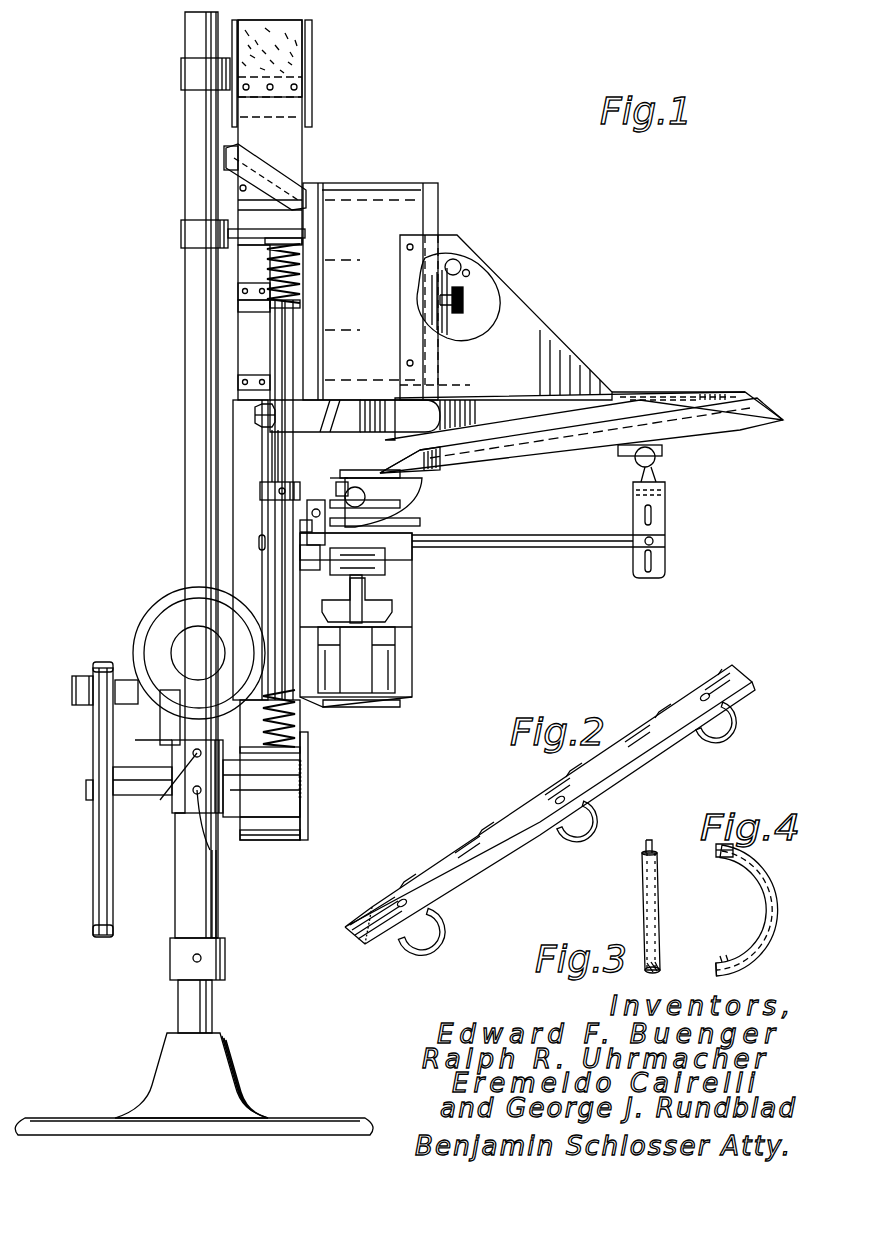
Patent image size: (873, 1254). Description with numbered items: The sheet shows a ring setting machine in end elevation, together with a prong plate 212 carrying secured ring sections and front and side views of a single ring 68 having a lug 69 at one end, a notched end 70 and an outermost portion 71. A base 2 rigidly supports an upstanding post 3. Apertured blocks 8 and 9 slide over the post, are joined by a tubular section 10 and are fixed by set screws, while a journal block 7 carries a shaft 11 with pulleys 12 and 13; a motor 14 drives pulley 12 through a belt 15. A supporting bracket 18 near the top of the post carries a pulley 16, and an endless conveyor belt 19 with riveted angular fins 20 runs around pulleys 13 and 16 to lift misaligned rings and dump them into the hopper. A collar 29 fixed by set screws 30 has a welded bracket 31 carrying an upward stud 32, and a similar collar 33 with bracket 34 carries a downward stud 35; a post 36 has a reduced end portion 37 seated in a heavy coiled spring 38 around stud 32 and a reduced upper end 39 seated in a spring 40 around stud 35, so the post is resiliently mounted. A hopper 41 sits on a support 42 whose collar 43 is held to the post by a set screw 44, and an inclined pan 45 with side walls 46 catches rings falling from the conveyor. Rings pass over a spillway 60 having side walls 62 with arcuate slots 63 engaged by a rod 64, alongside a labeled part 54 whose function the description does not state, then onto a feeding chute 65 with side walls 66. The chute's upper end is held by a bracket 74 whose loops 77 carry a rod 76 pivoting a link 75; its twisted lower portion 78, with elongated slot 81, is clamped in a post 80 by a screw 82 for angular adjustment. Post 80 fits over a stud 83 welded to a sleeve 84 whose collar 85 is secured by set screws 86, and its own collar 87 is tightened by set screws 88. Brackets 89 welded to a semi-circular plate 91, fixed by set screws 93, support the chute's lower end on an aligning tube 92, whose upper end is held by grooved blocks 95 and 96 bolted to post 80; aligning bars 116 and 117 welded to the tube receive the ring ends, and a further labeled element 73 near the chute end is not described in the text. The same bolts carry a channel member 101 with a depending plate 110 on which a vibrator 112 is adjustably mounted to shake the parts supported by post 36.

In FIG. 1, the base 2 is at (170, 1045).
In FIG. 1, the post 3 is at (185, 123).
In FIG. 1, the journal block 7 is at (113, 780).
In FIG. 1, the block 8 is at (170, 945).
In FIG. 1, the block 9 is at (188, 805).
In FIG. 1, the tubular section 10 is at (220, 880).
In FIG. 1, the shaft 11 is at (86, 790).
In FIG. 1, the pulley 12 is at (96, 915).
In FIG. 1, the pulley 13 is at (308, 806).
In FIG. 1, the motor 14 is at (160, 612).
In FIG. 1, the belt 15 is at (95, 664).
In FIG. 1, the pulley 16 is at (312, 66).
In FIG. 1, the supporting bracket 18 is at (181, 73).
In FIG. 1, the endless conveyor belt 19 is at (300, 133).
In FIG. 1, the angular fins 20 is at (238, 290).
In FIG. 1, the collar 29 is at (165, 740).
In FIG. 1, the set screws 30 is at (175, 800).
In FIG. 1, the bracket 31 is at (290, 782).
In FIG. 1, the stud 32 is at (300, 751).
In FIG. 1, the collar 33 is at (181, 237).
In FIG. 1, the bracket 34 is at (305, 233).
In FIG. 1, the stud 35 is at (302, 245).
In FIG. 1, the post 36 is at (285, 440).
In FIG. 1, the end portion 37 is at (303, 700).
In FIG. 1, the coiled spring 38 is at (296, 727).
In FIG. 1, the reduced upper end 39 is at (240, 312).
In FIG. 1, the spring 40 is at (300, 268).
In FIG. 1, the hopper 41 is at (418, 195).
In FIG. 1, the support 42 is at (400, 418).
In FIG. 1, the collar 43 is at (290, 437).
In FIG. 1, the set screw 44 is at (255, 414).
In FIG. 1, the inclined pan 45 is at (226, 160).
In FIG. 1, the side walls 46 is at (285, 178).
In FIG. 1, the key 54 is at (463, 292).
In FIG. 1, the spillway 60 is at (650, 390).
In FIG. 1, the side walls 62 is at (540, 325).
In FIG. 1, the arcuate slots 63 is at (470, 272).
In FIG. 1, the rod 64 is at (460, 262).
In FIG. 1, the feeding chute 65 is at (755, 430).
In FIG. 1, the side walls 66 is at (478, 434).
In FIG. 2, the ring 68 is at (738, 716).
In FIG. 3, the ring 68 is at (642, 893).
In FIG. 4, the ring 68 is at (750, 965).
In FIG. 3, the lug 69 is at (648, 834).
In FIG. 4, the lug 69 is at (734, 850).
In FIG. 3, the notched end 70 is at (658, 965).
In FIG. 4, the outermost portion of the ring 71 is at (772, 895).
In FIG. 1, the ball 73 is at (355, 487).
In FIG. 1, the bracket 74 is at (620, 456).
In FIG. 1, the link 75 is at (662, 485).
In FIG. 1, the rod 76 is at (641, 476).
In FIG. 1, the loops 77 is at (656, 455).
In FIG. 1, the lower portion of link 78 is at (652, 560).
In FIG. 1, the post 80 is at (565, 548).
In FIG. 1, the elongated slot 81 is at (652, 513).
In FIG. 1, the screw 82 is at (654, 541).
In FIG. 1, the stud 83 is at (300, 527).
In FIG. 1, the sleeve 84 is at (259, 545).
In FIG. 1, the collar 85 is at (272, 478).
In FIG. 1, the set screws 86 is at (260, 491).
In FIG. 1, the collar 87 is at (300, 560).
In FIG. 1, the set screws 88 is at (316, 503).
In FIG. 1, the brackets 89 is at (415, 490).
In FIG. 1, the semi-circular plate 91 is at (400, 504).
In FIG. 1, the aligning tube 92 is at (430, 462).
In FIG. 1, the set screws 93 is at (420, 522).
In FIG. 1, the block 95 is at (412, 548).
In FIG. 1, the block 96 is at (385, 568).
In FIG. 1, the channel member 101 is at (362, 592).
In FIG. 1, the plate 110 is at (392, 612).
In FIG. 1, the vibrator 112 is at (412, 652).
In FIG. 1, the aligning bar 116 is at (338, 482).
In FIG. 1, the aligning bar 117 is at (435, 476).
In FIG. 2, the prong plate 212 is at (652, 740).